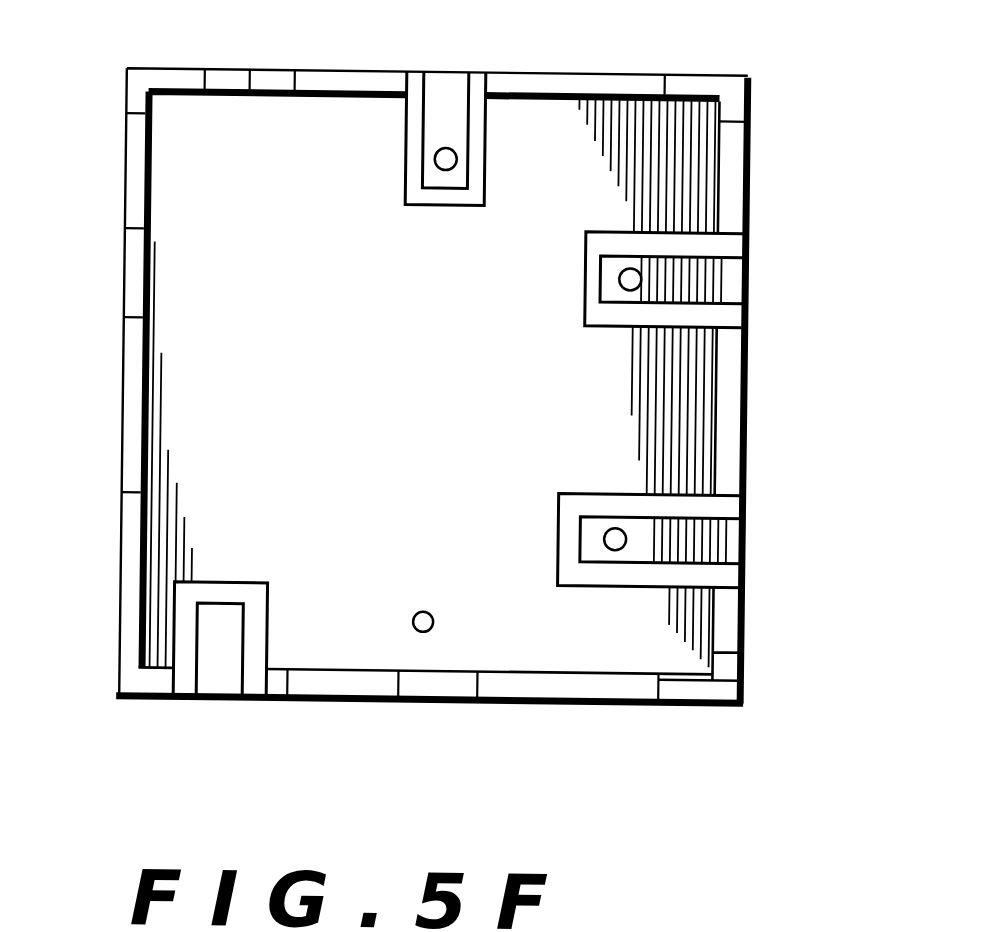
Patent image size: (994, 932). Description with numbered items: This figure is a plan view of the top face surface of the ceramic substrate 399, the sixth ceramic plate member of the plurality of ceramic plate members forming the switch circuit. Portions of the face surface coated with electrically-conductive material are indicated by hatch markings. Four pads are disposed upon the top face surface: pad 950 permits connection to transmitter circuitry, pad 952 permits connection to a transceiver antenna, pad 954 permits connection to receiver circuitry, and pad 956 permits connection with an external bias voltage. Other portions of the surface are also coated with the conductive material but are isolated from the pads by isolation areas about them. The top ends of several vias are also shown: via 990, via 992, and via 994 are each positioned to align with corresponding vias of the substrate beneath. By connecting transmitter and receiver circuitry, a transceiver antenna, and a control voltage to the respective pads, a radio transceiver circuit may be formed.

The ceramic substrate 399 is at (109, 807).
The pad 950 is at (443, 93).
The pad 952 is at (717, 280).
The pad 954 is at (722, 534).
The pad 956 is at (216, 671).
The via 990 is at (433, 163).
The via 992 is at (605, 536).
The via 994 is at (618, 278).